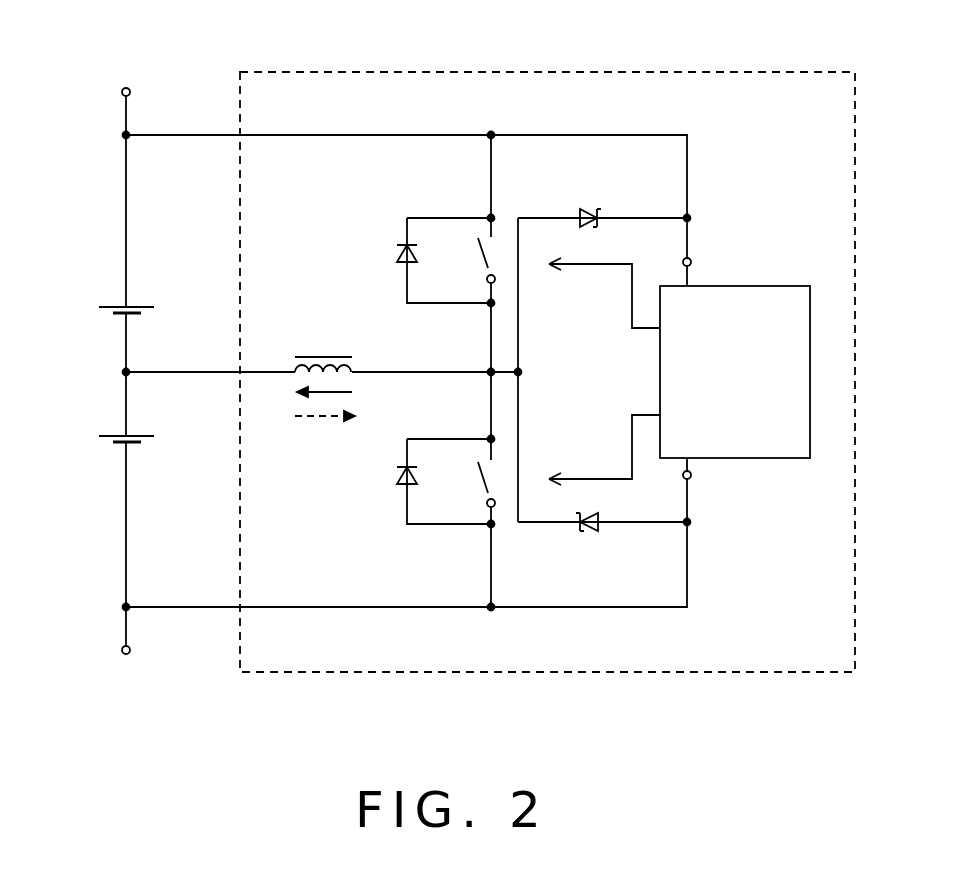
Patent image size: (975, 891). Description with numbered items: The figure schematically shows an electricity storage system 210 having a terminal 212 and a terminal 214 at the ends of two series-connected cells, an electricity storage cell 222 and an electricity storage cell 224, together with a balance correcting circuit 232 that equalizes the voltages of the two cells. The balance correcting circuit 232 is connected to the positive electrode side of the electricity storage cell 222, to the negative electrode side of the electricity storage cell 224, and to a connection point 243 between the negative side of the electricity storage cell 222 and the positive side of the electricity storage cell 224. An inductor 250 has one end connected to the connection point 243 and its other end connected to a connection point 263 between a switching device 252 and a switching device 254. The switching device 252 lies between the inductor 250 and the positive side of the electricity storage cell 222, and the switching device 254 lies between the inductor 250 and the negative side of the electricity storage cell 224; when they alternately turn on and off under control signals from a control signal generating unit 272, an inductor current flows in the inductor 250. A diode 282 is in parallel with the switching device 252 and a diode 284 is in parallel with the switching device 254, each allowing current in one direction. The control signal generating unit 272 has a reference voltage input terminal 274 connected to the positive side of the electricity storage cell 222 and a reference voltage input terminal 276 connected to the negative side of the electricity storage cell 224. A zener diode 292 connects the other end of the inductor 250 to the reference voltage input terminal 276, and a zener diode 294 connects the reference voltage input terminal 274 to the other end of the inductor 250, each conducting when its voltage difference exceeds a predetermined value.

The electricity storage system 210 is at (88, 32).
The terminal 212 is at (155, 72).
The terminal 214 is at (130, 654).
The electricity storage cell 222 is at (104, 318).
The electricity storage cell 224 is at (104, 446).
The balance correcting circuit 232 is at (770, 72).
The connection point 243 is at (134, 355).
The inductor 250 is at (320, 352).
The switching device 252 is at (470, 267).
The switching device 254 is at (472, 485).
The connection point 263 is at (482, 345).
The control signal generating unit 272 is at (778, 458).
The reference voltage input terminal 274 is at (722, 245).
The reference voltage input terminal 276 is at (691, 477).
The diode 282 is at (392, 252).
The diode 284 is at (392, 478).
The zener diode 292 is at (588, 538).
The zener diode 294 is at (588, 206).